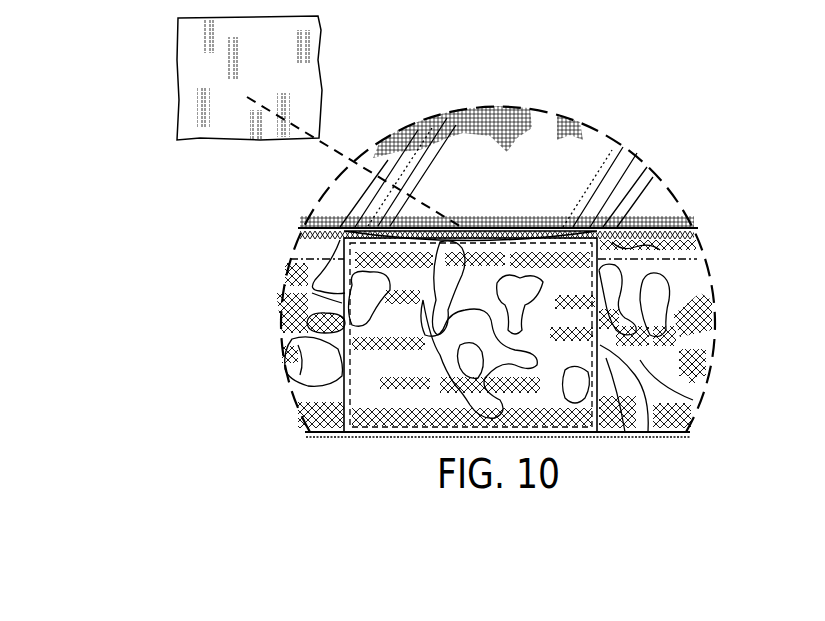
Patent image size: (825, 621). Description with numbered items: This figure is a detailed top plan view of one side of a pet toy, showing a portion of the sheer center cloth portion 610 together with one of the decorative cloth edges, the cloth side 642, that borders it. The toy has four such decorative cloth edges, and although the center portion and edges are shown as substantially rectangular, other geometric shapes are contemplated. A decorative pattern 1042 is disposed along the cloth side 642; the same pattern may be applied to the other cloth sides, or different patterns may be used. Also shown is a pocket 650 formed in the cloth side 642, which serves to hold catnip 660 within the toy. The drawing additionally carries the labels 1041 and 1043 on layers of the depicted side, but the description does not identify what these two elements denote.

The catnip 660 is at (177, 97).
The sheer center cloth portion 610 is at (553, 162).
The top wear layer 1043 is at (673, 222).
The pattern 1042 is at (678, 272).
The pocket 650 is at (312, 293).
The decorative cloth edge 642 is at (368, 433).
The base plate 1041 is at (668, 437).